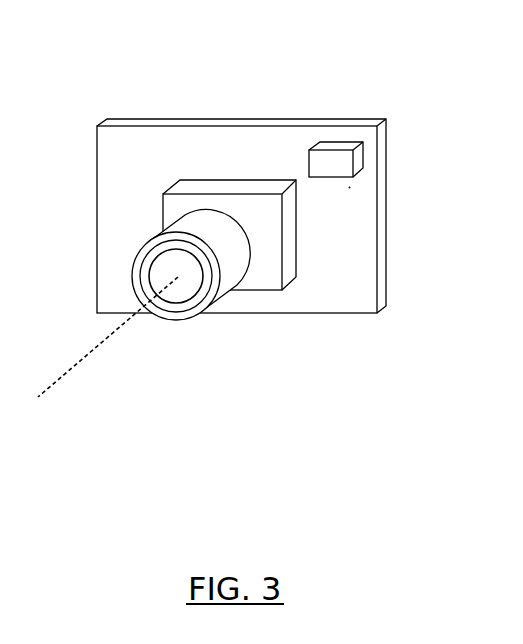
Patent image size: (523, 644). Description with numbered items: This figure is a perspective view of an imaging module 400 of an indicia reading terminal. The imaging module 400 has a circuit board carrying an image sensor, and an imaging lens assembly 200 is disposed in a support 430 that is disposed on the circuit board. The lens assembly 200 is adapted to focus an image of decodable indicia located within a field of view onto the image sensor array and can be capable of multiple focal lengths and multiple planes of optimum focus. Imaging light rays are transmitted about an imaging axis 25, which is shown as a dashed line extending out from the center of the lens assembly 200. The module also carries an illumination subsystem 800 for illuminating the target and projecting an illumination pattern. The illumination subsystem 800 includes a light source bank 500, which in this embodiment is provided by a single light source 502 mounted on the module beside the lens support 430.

The imaging module 400 is at (275, 102).
The light source 502 is at (346, 167).
The illumination subsystem 800 is at (349, 187).
The light source bank 500 is at (349, 187).
The support 430 is at (270, 273).
The imaging lens assembly 200 is at (185, 288).
The imaging axis 25 is at (87, 357).